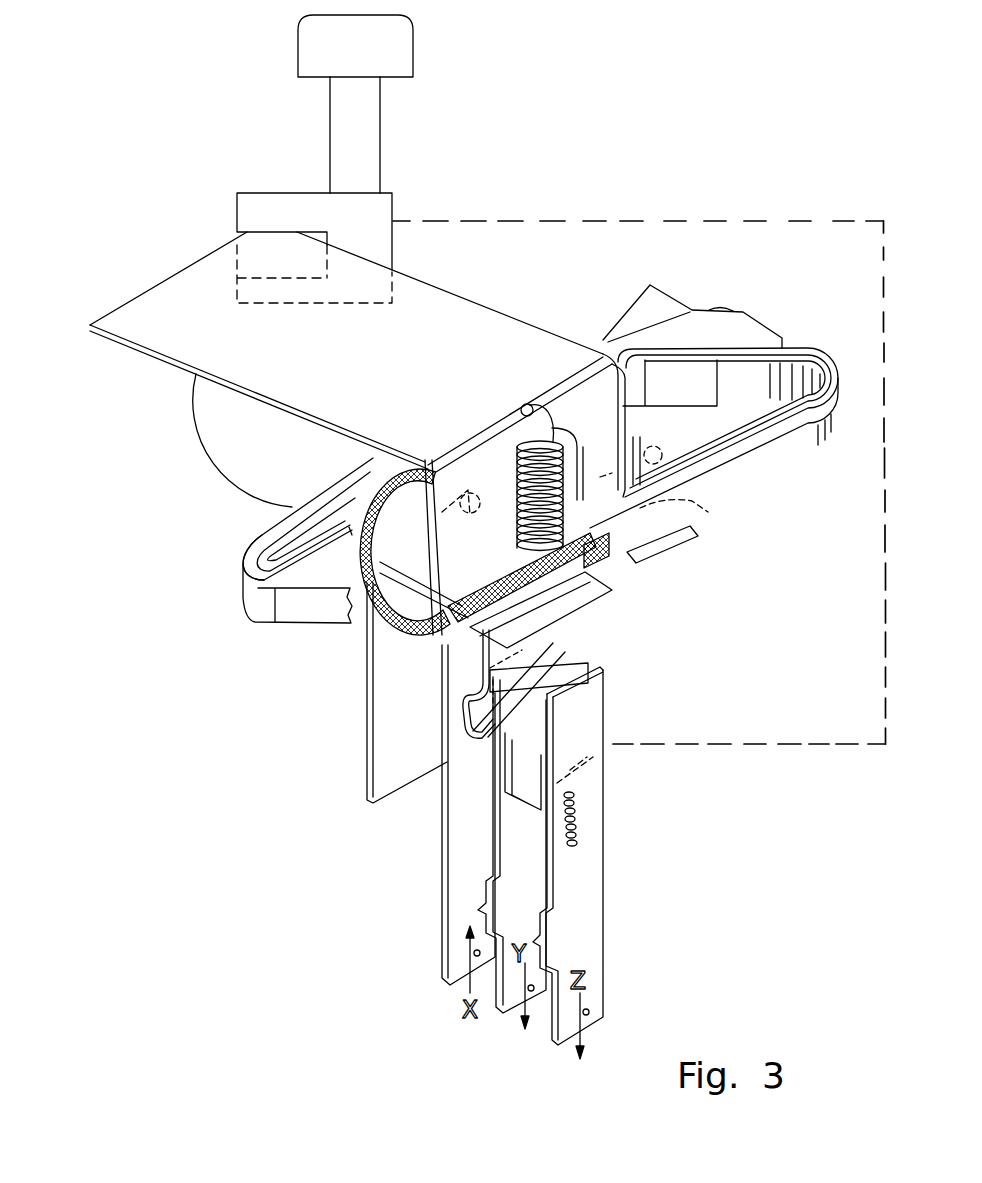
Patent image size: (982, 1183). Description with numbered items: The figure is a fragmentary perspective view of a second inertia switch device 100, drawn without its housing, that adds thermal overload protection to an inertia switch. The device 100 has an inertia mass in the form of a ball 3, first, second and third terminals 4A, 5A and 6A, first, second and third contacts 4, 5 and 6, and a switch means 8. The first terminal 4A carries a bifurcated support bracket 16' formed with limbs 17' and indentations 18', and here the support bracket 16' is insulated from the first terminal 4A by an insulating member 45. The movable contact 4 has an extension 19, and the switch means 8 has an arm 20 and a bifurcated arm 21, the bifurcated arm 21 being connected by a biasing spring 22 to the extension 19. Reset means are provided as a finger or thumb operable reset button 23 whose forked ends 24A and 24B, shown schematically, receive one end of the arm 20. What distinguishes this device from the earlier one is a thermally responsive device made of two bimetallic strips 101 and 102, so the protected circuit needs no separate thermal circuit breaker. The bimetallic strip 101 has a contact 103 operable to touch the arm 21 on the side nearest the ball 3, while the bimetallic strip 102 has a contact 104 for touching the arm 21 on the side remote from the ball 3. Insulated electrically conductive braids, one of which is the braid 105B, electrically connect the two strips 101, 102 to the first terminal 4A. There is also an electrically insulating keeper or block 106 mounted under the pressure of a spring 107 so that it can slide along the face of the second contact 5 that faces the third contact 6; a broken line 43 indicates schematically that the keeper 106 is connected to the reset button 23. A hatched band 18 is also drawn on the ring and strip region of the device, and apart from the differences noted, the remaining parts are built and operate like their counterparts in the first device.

The inertia mass 3 is at (218, 447).
The first contact 4 is at (552, 689).
The first terminal 4A is at (457, 917).
The second contact 5 is at (517, 657).
The second terminal 5A is at (527, 883).
The third contact 6 is at (598, 677).
The third terminal 6A is at (580, 947).
The switch means 8 is at (488, 333).
The bifurcated support bracket 16' is at (356, 693).
The limbs 17' is at (599, 587).
The insulating strip 18 is at (522, 604).
The indentations 18' is at (678, 503).
The extension 19 is at (567, 633).
The arm 20 is at (167, 305).
The bifurcated arm 21 is at (500, 513).
The biasing spring 22 is at (518, 444).
The reset button 23 is at (368, 131).
The forked end 24A is at (297, 205).
The forked end 24B is at (253, 283).
The broken line 43 is at (804, 221).
The insulating member 45 is at (262, 535).
The inertia switch device 100 is at (767, 713).
The bimetallic strip 101 is at (235, 594).
The bimetallic strip 102 is at (784, 449).
The contact 103 is at (461, 492).
The contact 104 is at (652, 444).
The electrically conductive braid 105B is at (432, 636).
The keeper 106 is at (533, 743).
The spring 107 is at (590, 832).